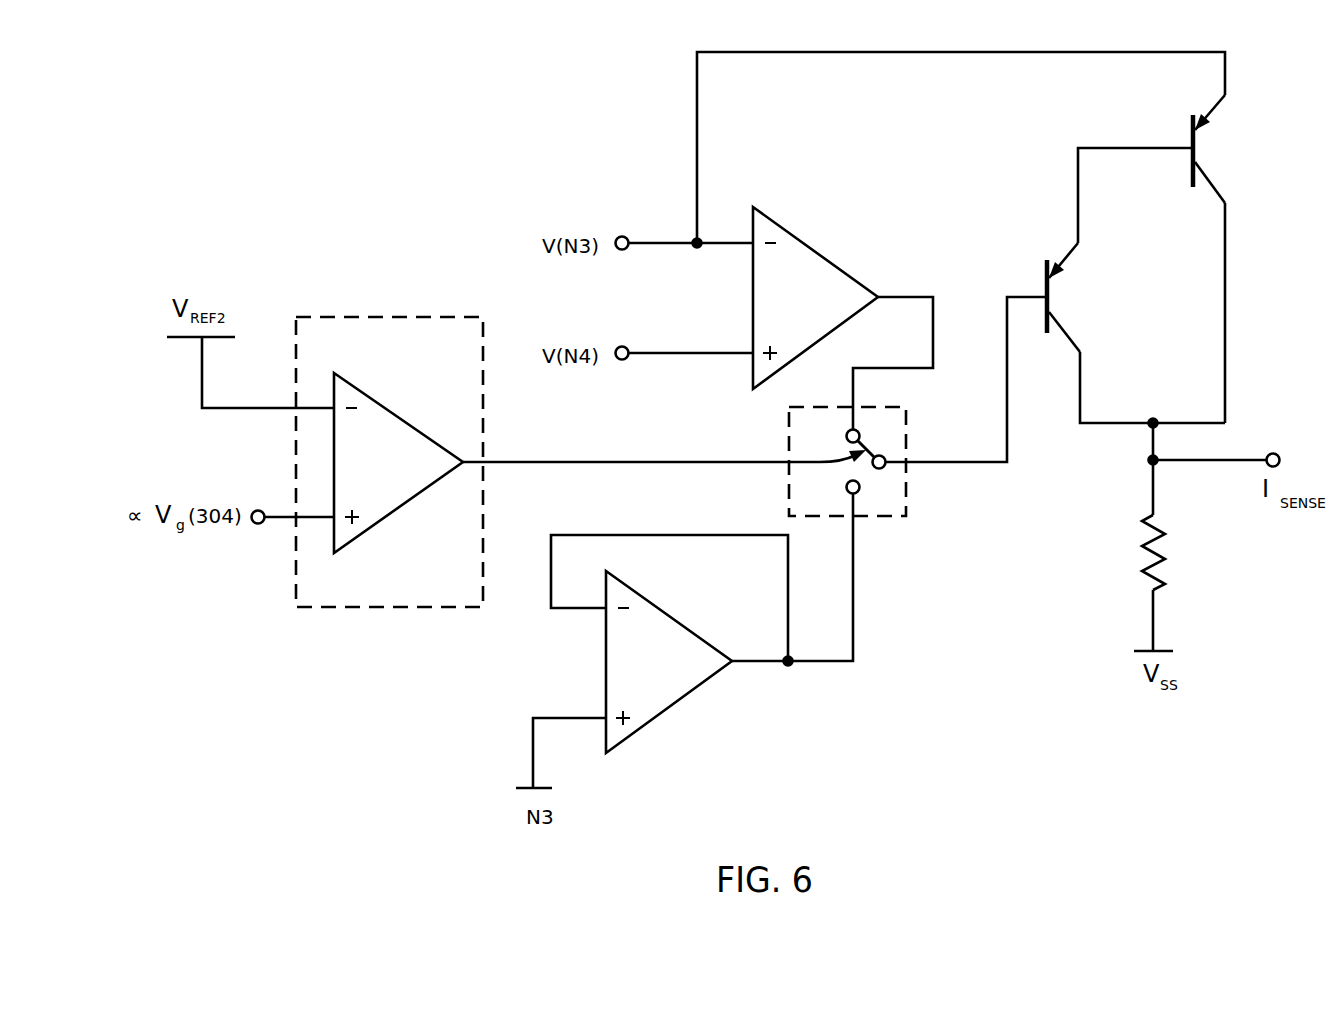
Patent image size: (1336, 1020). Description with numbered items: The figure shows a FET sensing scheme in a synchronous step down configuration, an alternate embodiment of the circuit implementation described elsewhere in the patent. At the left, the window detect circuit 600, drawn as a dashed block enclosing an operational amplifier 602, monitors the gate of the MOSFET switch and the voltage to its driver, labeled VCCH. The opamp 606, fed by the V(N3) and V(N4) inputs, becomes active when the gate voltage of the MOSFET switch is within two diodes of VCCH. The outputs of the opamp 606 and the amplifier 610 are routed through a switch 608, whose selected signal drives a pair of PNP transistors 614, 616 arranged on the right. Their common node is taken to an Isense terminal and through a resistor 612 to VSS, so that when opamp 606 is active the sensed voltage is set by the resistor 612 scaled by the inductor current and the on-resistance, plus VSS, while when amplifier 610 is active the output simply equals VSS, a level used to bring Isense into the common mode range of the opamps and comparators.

The window detect circuit 600 is at (352, 317).
The operational amplifier 602 is at (367, 474).
The opamp 606 is at (785, 309).
The switch 608 is at (908, 499).
The amplifier 610 is at (639, 673).
The resistor 612 is at (1175, 555).
The PNP transistor 614 is at (1060, 297).
The PNP transistor 616 is at (1205, 148).